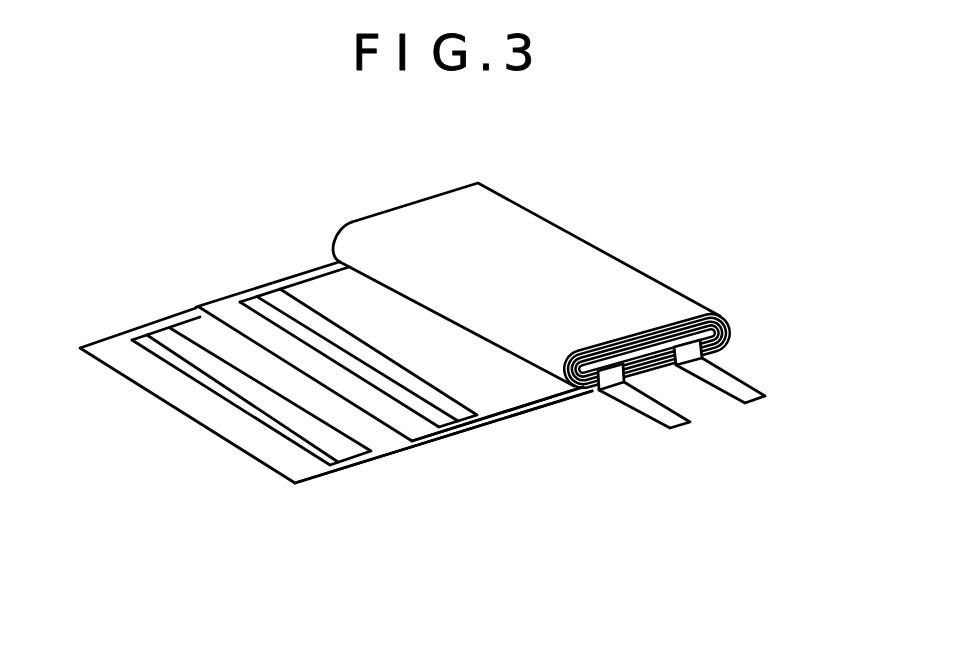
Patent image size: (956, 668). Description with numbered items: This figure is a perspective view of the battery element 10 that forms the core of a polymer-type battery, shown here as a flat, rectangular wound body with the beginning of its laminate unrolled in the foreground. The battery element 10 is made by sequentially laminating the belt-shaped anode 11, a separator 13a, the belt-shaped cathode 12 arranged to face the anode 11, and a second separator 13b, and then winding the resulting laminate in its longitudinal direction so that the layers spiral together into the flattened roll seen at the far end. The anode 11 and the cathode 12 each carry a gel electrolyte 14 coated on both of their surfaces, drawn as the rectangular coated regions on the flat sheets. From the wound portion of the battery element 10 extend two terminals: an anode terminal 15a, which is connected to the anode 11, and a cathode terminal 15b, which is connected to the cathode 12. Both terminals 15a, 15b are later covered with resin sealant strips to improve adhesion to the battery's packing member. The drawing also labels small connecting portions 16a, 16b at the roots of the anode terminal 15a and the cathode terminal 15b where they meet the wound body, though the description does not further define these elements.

The battery element 10 is at (545, 198).
The anode 11 is at (473, 420).
The cathode 12 is at (360, 457).
The separator 13a is at (427, 432).
The separator 13b is at (313, 474).
The gel electrolyte 14 is at (193, 324).
The anode terminal 15a is at (680, 427).
The cathode terminal 15b is at (757, 403).
The tab 16a is at (626, 396).
The tab 16b is at (704, 374).